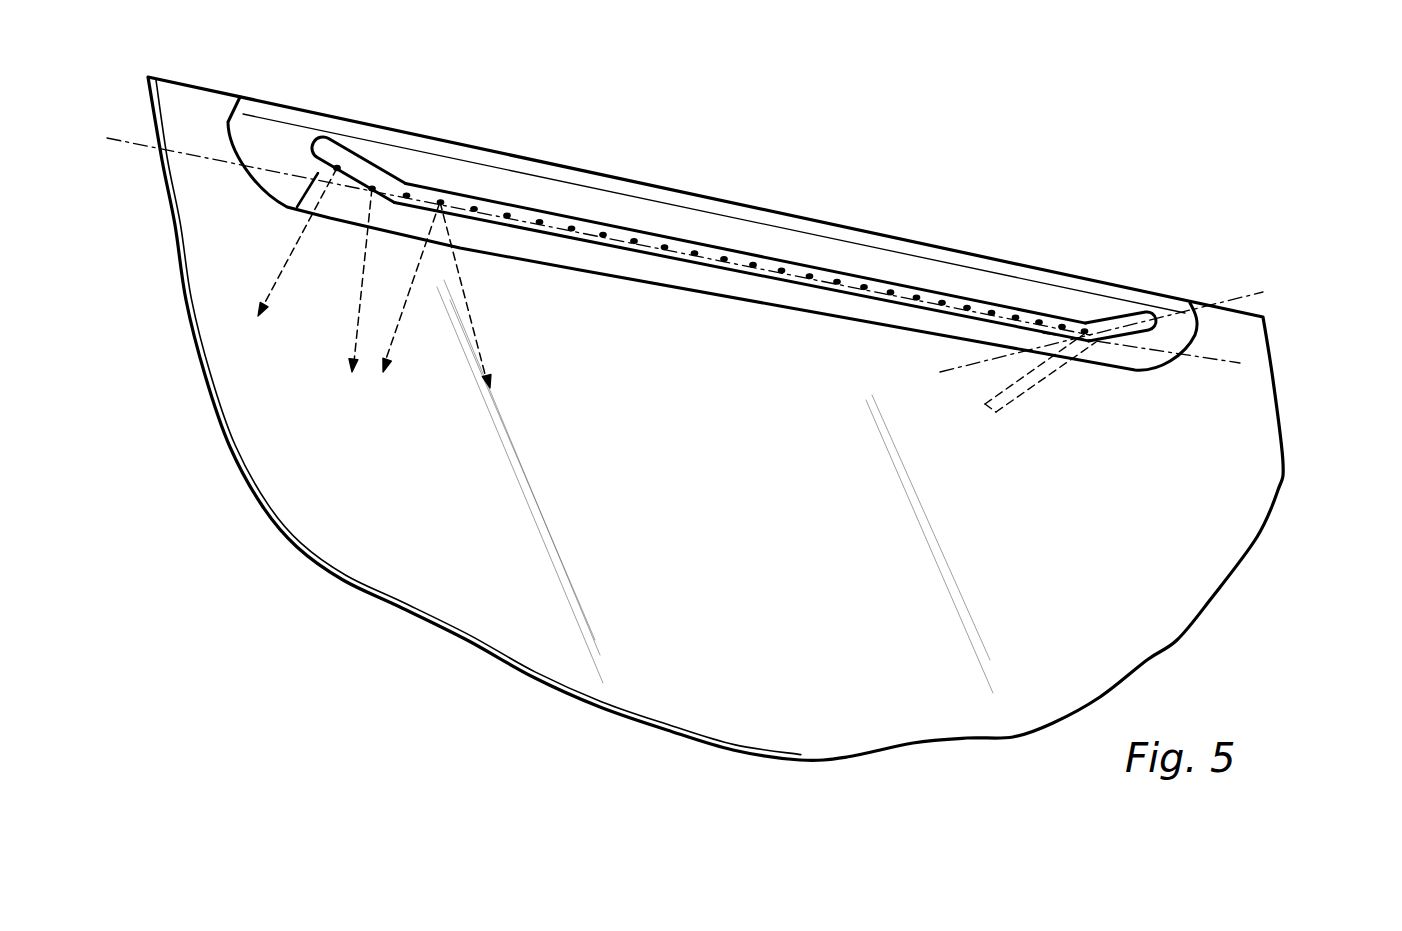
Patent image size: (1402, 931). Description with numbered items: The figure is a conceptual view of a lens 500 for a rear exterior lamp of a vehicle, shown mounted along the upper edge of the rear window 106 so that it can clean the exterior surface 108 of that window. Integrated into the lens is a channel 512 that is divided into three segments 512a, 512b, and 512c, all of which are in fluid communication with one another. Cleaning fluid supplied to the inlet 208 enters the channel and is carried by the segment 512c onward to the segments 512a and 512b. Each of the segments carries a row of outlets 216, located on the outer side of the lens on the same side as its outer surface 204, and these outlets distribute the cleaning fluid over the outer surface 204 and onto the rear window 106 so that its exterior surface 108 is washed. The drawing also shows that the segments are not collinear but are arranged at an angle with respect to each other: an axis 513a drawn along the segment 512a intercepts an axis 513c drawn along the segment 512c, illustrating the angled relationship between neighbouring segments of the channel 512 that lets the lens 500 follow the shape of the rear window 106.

The lens 500 is at (727, 272).
The channel 512 is at (667, 247).
The channel segment 512a is at (748, 238).
The channel segment 512b is at (384, 155).
The channel segment 512c is at (1112, 298).
The axis 513a is at (1220, 357).
The axis 513c is at (1240, 297).
The outer surface 204 is at (583, 207).
The outlets 216 is at (333, 169).
The inlet 208 is at (1025, 387).
The rear window 106 is at (1210, 518).
The exterior surface 108 is at (1177, 573).